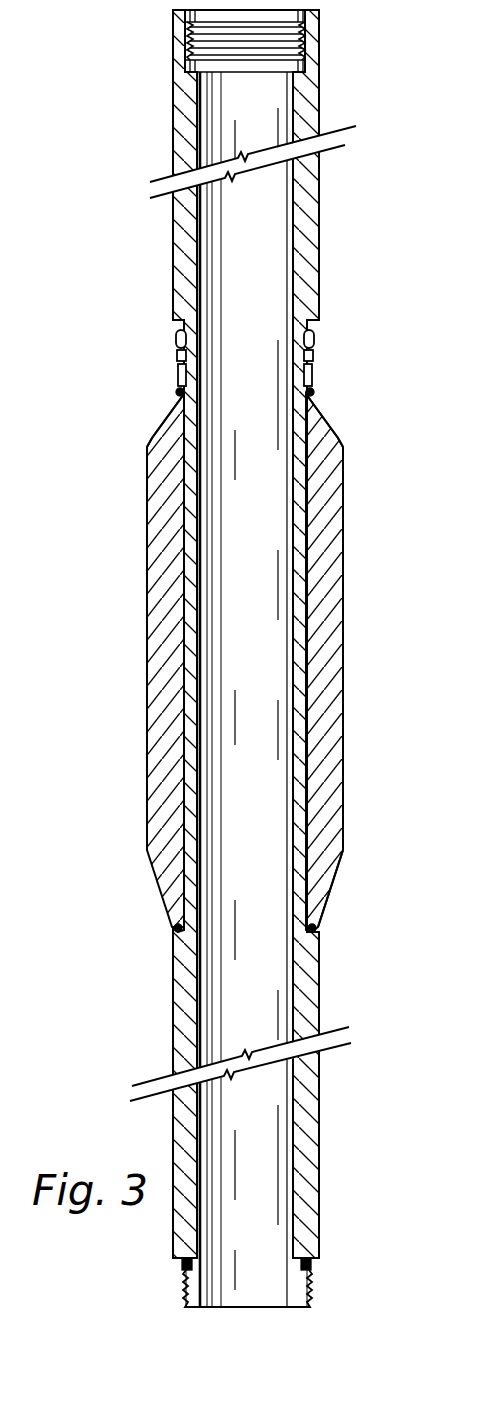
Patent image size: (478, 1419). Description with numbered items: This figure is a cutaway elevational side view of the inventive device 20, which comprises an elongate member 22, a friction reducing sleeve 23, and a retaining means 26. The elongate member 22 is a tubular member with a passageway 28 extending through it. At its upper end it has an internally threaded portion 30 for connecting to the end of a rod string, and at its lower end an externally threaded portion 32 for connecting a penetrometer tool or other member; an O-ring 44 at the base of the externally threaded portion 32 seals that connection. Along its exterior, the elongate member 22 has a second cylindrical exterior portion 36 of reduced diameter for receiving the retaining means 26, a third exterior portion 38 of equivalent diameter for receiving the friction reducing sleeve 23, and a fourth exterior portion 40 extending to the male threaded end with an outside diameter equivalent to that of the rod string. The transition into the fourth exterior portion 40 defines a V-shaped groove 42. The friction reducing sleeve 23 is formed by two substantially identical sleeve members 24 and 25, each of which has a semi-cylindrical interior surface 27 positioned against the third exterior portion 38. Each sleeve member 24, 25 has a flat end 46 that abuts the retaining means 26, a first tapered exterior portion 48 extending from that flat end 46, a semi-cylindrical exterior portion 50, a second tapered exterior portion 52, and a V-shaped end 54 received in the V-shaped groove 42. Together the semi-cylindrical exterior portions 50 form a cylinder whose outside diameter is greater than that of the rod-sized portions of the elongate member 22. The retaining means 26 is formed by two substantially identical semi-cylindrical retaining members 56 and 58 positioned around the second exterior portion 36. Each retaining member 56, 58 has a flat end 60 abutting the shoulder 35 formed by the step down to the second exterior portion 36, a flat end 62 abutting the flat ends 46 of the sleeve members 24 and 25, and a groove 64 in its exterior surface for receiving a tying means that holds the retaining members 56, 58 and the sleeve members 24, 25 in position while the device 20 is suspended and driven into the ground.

The inventive device 20 is at (155, 62).
The elongate member 22 is at (172, 135).
The friction reducing sleeve 23 is at (148, 655).
The sleeve member 24 is at (160, 565).
The sleeve member 25 is at (335, 566).
The retaining means 26 is at (314, 388).
The semi-cylindrical interior surface 27 is at (291, 766).
The passageway 28 is at (262, 107).
The internally threaded portion 30 is at (290, 24).
The externally threaded portion 32 is at (307, 1292).
The shoulder 35 is at (172, 343).
The second cylindrical exterior portion 36 is at (172, 363).
The third exterior portion 38 is at (182, 762).
The fourth exterior portion 40 is at (320, 1100).
The V-shaped groove 42 is at (176, 923).
The O-ring 44 is at (313, 1267).
The flat end 46 is at (314, 390).
The first tapered exterior portion 48 is at (340, 433).
The semi-cylindrical exterior portion 50 is at (345, 652).
The second tapered exterior portion 52 is at (337, 880).
The V-shaped end 54 is at (318, 943).
The semi-cylindrical retaining member 56 is at (174, 391).
The semi-cylindrical retaining member 58 is at (316, 335).
The flat end 60 is at (177, 317).
The flat end 62 is at (160, 428).
The groove 64 is at (316, 368).